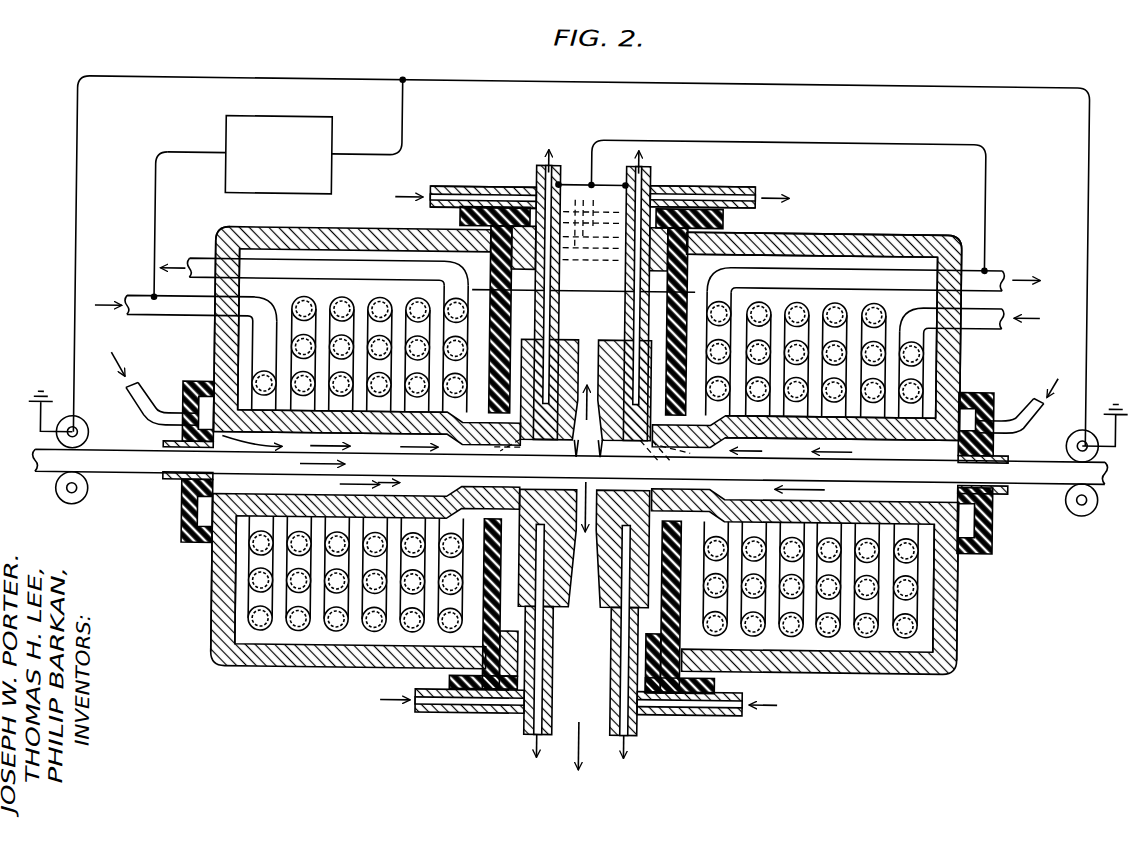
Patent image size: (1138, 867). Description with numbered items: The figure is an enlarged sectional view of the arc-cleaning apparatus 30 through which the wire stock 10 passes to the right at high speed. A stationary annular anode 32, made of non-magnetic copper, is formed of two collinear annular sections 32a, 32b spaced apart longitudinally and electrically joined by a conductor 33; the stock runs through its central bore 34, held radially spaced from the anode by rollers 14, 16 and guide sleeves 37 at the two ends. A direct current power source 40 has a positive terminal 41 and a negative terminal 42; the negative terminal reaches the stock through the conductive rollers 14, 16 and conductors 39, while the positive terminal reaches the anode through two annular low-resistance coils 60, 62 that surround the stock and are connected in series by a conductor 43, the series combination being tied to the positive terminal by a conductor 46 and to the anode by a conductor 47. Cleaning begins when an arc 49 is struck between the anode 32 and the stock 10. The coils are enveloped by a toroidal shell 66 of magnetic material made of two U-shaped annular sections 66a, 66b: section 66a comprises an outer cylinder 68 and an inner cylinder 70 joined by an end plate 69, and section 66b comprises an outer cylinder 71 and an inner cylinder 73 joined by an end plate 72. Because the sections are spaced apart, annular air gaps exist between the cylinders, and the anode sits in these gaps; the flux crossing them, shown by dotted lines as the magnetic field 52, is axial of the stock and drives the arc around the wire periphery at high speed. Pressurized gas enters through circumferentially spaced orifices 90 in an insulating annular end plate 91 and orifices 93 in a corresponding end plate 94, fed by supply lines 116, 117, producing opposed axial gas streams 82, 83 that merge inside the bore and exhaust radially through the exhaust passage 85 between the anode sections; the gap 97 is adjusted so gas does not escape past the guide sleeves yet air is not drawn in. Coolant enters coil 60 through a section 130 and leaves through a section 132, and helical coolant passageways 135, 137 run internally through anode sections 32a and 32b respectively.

The wire stock 10 is at (153, 470).
The roller 14 is at (88, 438).
The roller 16 is at (1066, 442).
The arc-cleaning apparatus 30 is at (457, 450).
The stationary annular anode 32 is at (710, 439).
The annular anode section 32a is at (558, 298).
The annular anode section 32b is at (623, 326).
The conductor 33 is at (573, 184).
The bore 34 is at (606, 453).
The guide sleeves 37 is at (172, 446).
The conductors 39 is at (73, 236).
The direct current power source 40 is at (282, 121).
The positive terminal 41 is at (189, 160).
The negative terminal 42 is at (363, 152).
The conductor 43 is at (588, 291).
The conductor 46 is at (152, 240).
The conductor 47 is at (793, 139).
The arc 49 is at (575, 454).
The magnetic field 52 is at (592, 332).
The coil 60 is at (294, 304).
The coil 62 is at (880, 304).
The toroidal shell 66 is at (846, 226).
The annular shell section 66a is at (222, 231).
The annular shell section 66b is at (947, 235).
The outer cylinder 68 is at (303, 236).
The end plate 69 is at (215, 349).
The inner cylinder 70 is at (302, 430).
The outer cylinder 71 is at (818, 246).
The end plate 72 is at (957, 352).
The inner cylinder 73 is at (868, 436).
The gas stream 82 is at (407, 452).
The gas stream 83 is at (790, 478).
The exhaust passage 85 is at (585, 556).
The orifices 90 is at (164, 412).
The annular end plate 91 is at (182, 545).
The orifices 93 is at (1003, 420).
The end plate 94 is at (995, 547).
The gap 97 is at (224, 447).
The supply line 116 is at (128, 405).
The supply line 117 is at (1043, 408).
The coil section 130 is at (150, 319).
The coil section 132 is at (201, 262).
The coolant passageway 135 is at (471, 188).
The coolant passageway 137 is at (720, 189).